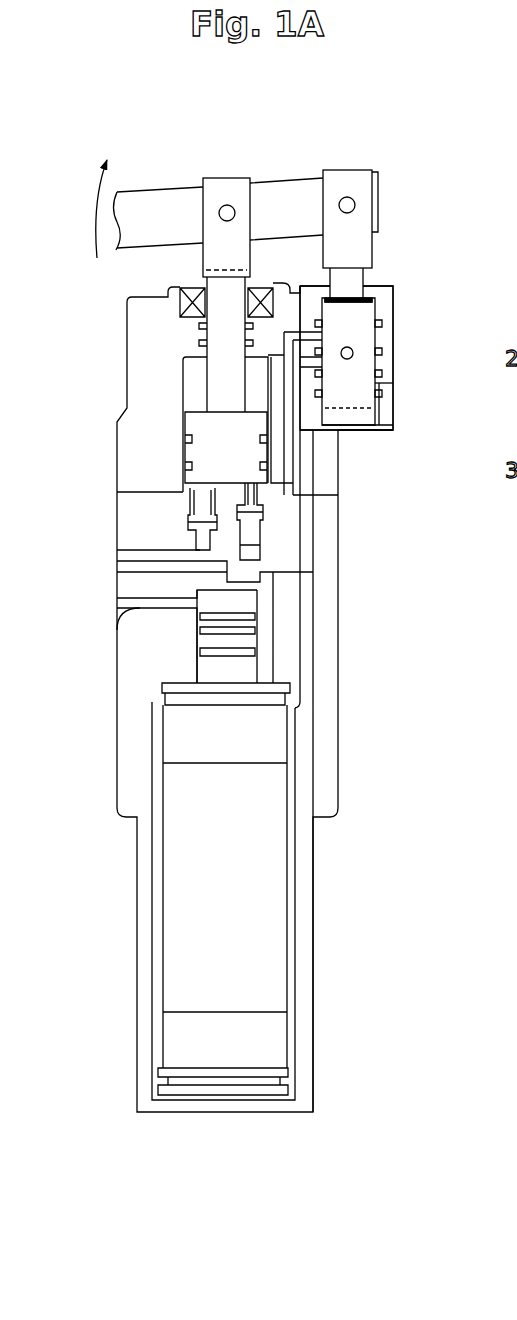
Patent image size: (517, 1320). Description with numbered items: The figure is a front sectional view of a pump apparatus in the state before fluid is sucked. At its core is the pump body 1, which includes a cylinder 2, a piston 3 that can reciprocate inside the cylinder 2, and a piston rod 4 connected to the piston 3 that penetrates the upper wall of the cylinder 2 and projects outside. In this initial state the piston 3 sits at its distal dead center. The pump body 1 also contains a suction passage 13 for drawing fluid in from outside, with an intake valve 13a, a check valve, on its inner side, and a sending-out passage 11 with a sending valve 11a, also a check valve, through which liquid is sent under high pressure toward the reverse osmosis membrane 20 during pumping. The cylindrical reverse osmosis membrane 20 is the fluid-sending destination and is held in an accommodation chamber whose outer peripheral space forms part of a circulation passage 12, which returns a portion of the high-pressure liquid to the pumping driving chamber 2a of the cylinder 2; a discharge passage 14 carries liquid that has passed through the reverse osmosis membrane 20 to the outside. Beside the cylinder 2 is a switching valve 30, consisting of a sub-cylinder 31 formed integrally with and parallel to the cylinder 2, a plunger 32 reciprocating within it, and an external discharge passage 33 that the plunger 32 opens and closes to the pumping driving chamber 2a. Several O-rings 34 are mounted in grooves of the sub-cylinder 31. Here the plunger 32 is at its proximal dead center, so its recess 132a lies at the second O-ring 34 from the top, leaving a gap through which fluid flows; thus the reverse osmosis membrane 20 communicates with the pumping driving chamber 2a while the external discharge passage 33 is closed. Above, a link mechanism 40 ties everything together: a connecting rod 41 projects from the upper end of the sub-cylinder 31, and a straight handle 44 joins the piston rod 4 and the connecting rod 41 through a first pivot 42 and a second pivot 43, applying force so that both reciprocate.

The pump body 1 is at (96, 362).
The cylinder 2 is at (120, 397).
The pumping driving chamber 2a is at (190, 397).
The piston 3 is at (182, 457).
The piston rod 4 is at (198, 365).
The sending-out passage 11 is at (267, 633).
The sending valve 11a is at (263, 517).
The circulation passage 12 is at (305, 507).
The suction passage 13 is at (135, 548).
The intake valve 13a is at (195, 520).
The discharge passage 14 is at (138, 612).
The reverse osmosis membrane 20 is at (181, 903).
The switching valve 30 is at (415, 358).
The sub-cylinder 31 is at (394, 305).
The plunger 32 is at (364, 404).
The external discharge passage 33 is at (395, 384).
The O-ring 34 is at (385, 392).
The link mechanism 40 is at (286, 160).
The connecting rod 41 is at (378, 246).
The first pivot 42 is at (223, 209).
The second pivot 43 is at (350, 200).
The handle 44 is at (156, 184).
The recess 132a is at (353, 352).